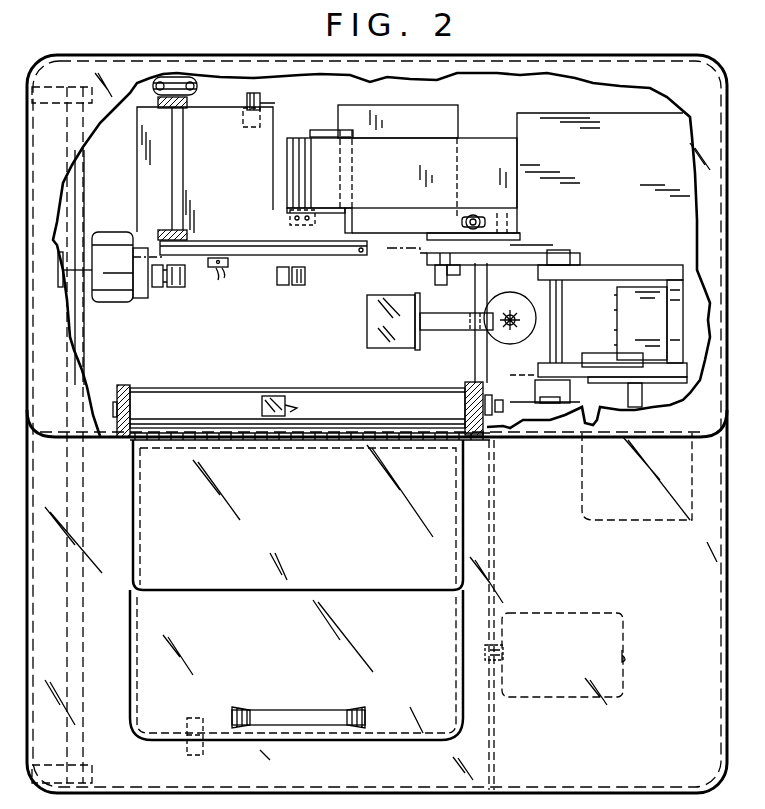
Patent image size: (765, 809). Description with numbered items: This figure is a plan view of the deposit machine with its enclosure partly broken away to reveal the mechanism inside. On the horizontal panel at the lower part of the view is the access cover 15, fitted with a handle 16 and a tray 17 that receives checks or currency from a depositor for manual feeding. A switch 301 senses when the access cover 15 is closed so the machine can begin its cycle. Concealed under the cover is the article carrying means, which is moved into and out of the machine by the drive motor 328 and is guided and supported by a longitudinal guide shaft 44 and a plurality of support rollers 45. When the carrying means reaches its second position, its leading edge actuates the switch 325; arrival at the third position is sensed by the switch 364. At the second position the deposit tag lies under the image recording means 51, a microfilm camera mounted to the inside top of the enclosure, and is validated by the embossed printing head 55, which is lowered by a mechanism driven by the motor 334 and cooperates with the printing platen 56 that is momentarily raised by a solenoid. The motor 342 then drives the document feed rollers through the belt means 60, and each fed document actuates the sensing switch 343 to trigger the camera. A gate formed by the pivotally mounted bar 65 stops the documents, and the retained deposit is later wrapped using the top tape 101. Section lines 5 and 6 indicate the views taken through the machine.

The switch 364 is at (282, 97).
The top tape 101 is at (398, 186).
The drive motor 328 is at (133, 304).
The longitudinal guide shaft 44 is at (82, 347).
The support rollers 45 is at (177, 288).
The switch 325 is at (208, 270).
The pivotally mounted bar 65 is at (366, 255).
The printing platen 56 is at (378, 316).
The image recording means 51 is at (517, 294).
The embossed printing head 55 is at (617, 318).
The sensing switch 343 is at (272, 395).
The section line 5- 5 is at (133, 224).
The section line 6- 6 is at (365, 375).
The tray 17 is at (304, 516).
The access cover 15 is at (462, 713).
The handle 16 is at (285, 710).
The switch 301 is at (203, 763).
The belt means 60 is at (494, 545).
The motor 334 is at (585, 474).
The motor 342 is at (620, 614).